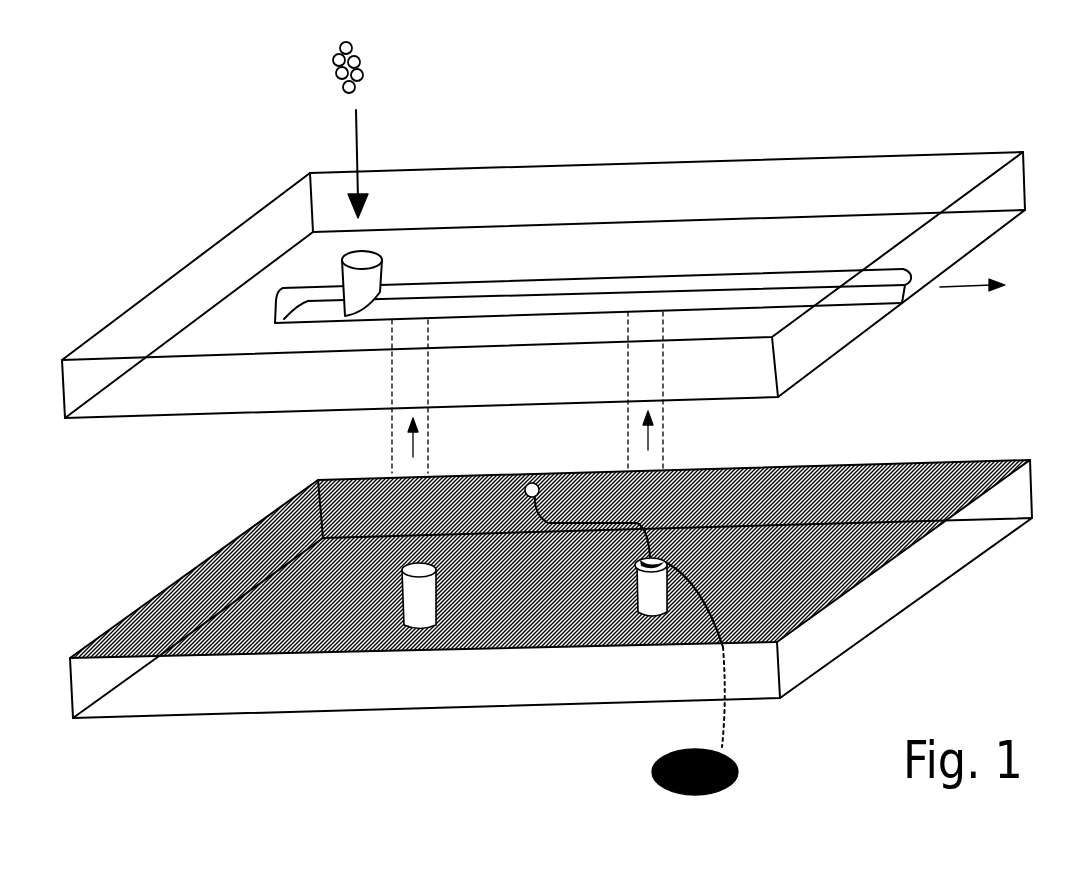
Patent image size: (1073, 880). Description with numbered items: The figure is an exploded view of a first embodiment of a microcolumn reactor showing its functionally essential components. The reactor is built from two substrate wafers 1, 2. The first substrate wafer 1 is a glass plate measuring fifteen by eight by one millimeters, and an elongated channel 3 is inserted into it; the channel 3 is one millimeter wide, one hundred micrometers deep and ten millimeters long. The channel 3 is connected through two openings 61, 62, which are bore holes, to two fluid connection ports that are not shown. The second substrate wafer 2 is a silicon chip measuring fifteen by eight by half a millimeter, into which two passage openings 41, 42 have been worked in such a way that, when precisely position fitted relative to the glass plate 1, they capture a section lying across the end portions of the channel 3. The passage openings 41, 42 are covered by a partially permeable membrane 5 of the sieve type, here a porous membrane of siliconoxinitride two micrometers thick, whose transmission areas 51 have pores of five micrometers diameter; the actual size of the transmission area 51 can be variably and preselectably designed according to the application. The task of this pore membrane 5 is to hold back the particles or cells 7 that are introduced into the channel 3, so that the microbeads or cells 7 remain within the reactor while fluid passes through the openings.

The first substrate wafer 1 is at (943, 173).
The second substrate wafer 2 is at (540, 585).
The channel 3 is at (538, 290).
The partially permeable sieve-like membrane 5 is at (637, 572).
The micro-beads and/or cells 7 is at (366, 130).
The passage opening 41 is at (373, 653).
The passage opening 42 is at (638, 610).
The transmission area 51 is at (663, 755).
The opening 61 is at (365, 285).
The opening 62 is at (994, 282).